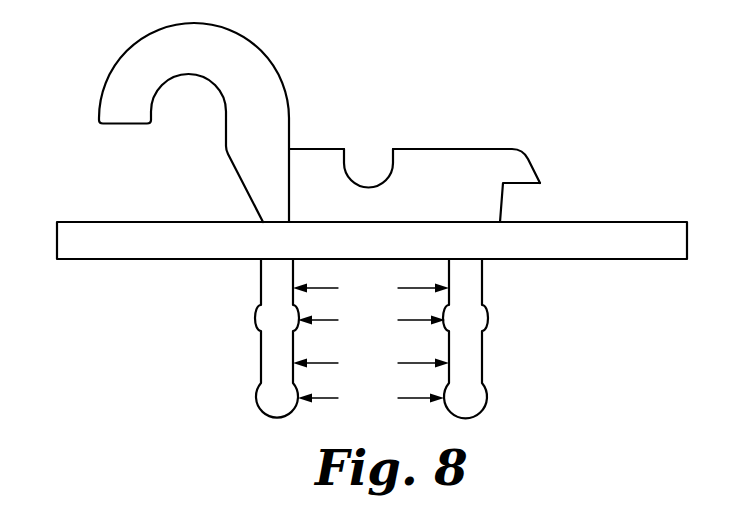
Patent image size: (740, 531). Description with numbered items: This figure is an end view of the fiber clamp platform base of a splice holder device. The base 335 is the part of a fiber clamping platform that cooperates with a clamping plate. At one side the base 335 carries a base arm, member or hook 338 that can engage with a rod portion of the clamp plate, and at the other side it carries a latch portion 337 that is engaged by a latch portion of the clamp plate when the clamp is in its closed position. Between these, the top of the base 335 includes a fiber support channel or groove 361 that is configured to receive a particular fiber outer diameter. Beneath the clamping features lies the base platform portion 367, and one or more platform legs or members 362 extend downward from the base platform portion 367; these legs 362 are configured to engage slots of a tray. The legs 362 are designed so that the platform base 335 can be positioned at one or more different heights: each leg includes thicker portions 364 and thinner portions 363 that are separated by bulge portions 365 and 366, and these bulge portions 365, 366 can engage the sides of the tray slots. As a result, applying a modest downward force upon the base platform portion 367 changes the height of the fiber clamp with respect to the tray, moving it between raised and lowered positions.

The base 335 is at (497, 152).
The latch portion 337 is at (518, 185).
The hook 338 is at (133, 67).
The fiber support channel/groove 361 is at (368, 162).
The platform legs 362 is at (238, 301).
The thinner portions 363 is at (371, 287).
The thicker portions 364 is at (371, 363).
The bulge portion 365 is at (371, 323).
The bulge portion 366 is at (371, 398).
The base platform portion 367 is at (162, 235).